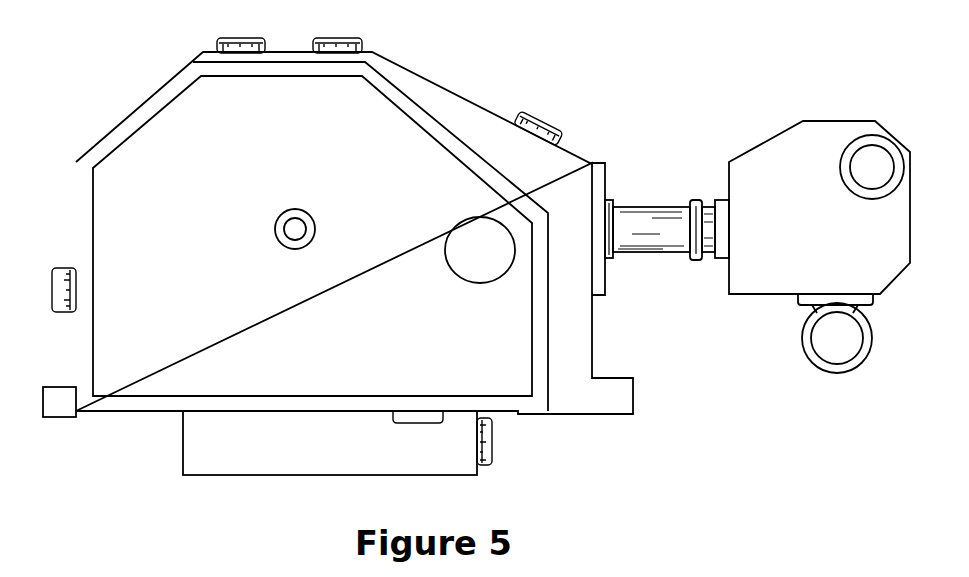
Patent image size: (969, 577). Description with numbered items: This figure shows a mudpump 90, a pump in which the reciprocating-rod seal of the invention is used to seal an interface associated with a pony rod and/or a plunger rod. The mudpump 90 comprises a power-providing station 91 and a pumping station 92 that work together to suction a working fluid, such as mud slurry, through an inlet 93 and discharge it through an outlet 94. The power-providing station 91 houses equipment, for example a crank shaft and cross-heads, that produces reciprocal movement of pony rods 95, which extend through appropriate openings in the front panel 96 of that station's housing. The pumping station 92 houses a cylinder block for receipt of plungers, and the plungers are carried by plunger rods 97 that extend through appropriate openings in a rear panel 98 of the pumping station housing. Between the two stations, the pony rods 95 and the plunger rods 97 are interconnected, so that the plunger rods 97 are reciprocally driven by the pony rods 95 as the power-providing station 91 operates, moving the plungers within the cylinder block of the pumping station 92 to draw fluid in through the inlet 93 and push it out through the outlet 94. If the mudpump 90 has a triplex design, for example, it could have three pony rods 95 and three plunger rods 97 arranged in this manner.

The mudpump 90 is at (671, 100).
The power-providing station 91 is at (265, 170).
The pumping station 92 is at (792, 245).
The inlet 93 is at (830, 344).
The outlet 94 is at (870, 166).
The pony rods 95 is at (636, 226).
The front panel 96 is at (606, 193).
The plunger rods 97 is at (696, 212).
The rear panel 98 is at (727, 265).